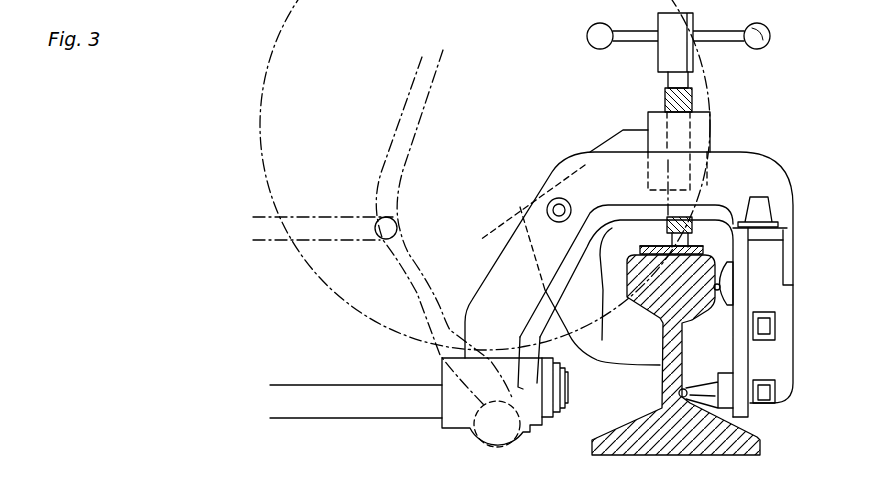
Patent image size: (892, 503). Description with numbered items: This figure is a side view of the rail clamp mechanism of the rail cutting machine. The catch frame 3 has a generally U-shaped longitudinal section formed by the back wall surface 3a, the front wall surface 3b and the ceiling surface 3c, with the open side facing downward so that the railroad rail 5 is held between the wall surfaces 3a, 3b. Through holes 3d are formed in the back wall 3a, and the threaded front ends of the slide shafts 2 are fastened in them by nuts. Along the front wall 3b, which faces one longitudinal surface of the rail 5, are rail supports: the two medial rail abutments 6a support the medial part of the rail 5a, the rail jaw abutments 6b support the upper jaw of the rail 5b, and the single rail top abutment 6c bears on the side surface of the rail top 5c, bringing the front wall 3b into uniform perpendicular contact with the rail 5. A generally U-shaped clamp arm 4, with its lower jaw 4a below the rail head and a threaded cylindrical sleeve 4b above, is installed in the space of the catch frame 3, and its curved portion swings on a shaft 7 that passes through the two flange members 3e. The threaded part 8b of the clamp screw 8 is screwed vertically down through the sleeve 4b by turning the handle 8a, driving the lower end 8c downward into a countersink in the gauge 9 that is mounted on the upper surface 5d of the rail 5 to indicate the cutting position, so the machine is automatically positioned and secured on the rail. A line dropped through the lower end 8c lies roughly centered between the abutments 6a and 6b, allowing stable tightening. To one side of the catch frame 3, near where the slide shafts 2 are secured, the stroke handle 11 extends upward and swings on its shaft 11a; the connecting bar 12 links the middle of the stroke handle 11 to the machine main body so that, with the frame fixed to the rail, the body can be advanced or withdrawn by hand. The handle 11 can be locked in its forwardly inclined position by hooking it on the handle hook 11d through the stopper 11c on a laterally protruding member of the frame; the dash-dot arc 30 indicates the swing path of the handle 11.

The slide shaft 2 is at (297, 400).
The catch frame 3 is at (788, 170).
The back wall surface 3a is at (538, 304).
The front wall surface 3b is at (748, 418).
The ceiling surface 3c is at (725, 207).
The through hole 3d is at (442, 400).
The flange member 3e is at (517, 240).
The clamp arm 4 is at (546, 170).
The lower jaw 4a is at (612, 362).
The threaded cylindrical sleeve 4b is at (711, 136).
The railroad rail 5 is at (761, 447).
The medial part of the rail 5a is at (664, 383).
The upper jaw of the rail 5b is at (605, 362).
The side surface of the rail top 5c is at (640, 294).
The upper surface of the rail 5d is at (641, 226).
The medial rail abutment 6a is at (718, 377).
The rail jaw abutment 6b is at (720, 343).
The rail top abutment 6c is at (726, 292).
The shaft 7 is at (535, 213).
The clamp screw 8 is at (694, 17).
The handle 8a is at (771, 35).
The threaded part 8b is at (665, 96).
The lower end 8c is at (690, 247).
The gauge 9 is at (643, 248).
The stroke handle 11 is at (393, 137).
The shaft 11a is at (497, 436).
The stopper 11c is at (765, 211).
The handle hook 11d is at (791, 257).
The connecting bar 12 is at (331, 225).
The swing locus of lever 30 is at (266, 97).